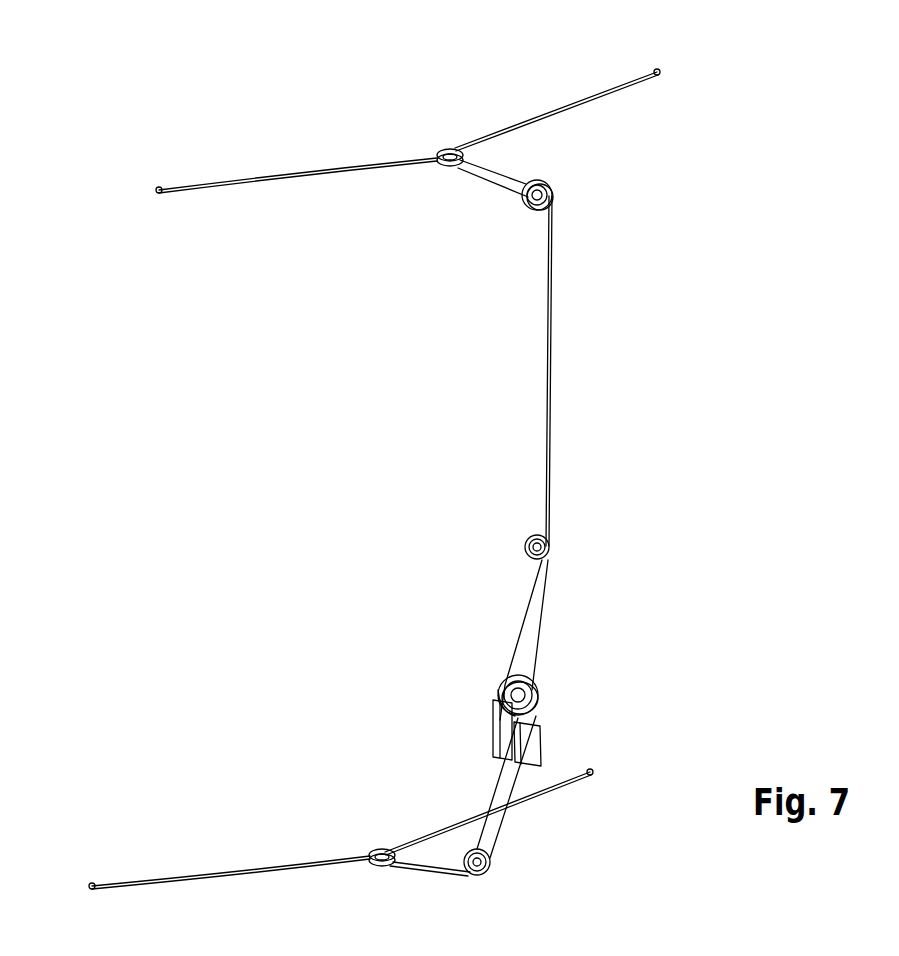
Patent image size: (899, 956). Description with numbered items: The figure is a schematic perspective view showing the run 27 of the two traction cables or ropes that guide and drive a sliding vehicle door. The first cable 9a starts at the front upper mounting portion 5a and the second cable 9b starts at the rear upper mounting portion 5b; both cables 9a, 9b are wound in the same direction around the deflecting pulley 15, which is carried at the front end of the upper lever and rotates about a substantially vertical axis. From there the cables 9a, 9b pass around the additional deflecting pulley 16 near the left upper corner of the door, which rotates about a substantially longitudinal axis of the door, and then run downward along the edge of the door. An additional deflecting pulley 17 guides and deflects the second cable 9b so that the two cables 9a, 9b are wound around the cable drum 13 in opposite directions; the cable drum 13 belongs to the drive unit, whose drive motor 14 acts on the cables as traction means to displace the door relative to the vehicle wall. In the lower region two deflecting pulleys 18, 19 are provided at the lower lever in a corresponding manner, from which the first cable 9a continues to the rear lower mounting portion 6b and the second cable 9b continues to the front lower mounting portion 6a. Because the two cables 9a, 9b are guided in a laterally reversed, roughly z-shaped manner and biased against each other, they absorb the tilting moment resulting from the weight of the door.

The front upper mounting portion 5a is at (155, 187).
The rear upper mounting portion 5b is at (660, 68).
The front lower mounting portion 6a is at (88, 882).
The rear lower mounting portion 6b is at (597, 768).
The first cable 9a is at (247, 178).
The second cable 9b is at (583, 98).
The cable drum 13 is at (537, 686).
The drive motor 14 is at (537, 745).
The deflecting pulley 15 is at (448, 150).
The additional deflecting pulley 16 is at (553, 190).
The additional deflecting pulley 17 is at (549, 540).
The deflecting pulley 18 is at (483, 877).
The deflecting pulley 19 is at (382, 848).
The run of the cables 27 is at (864, 226).